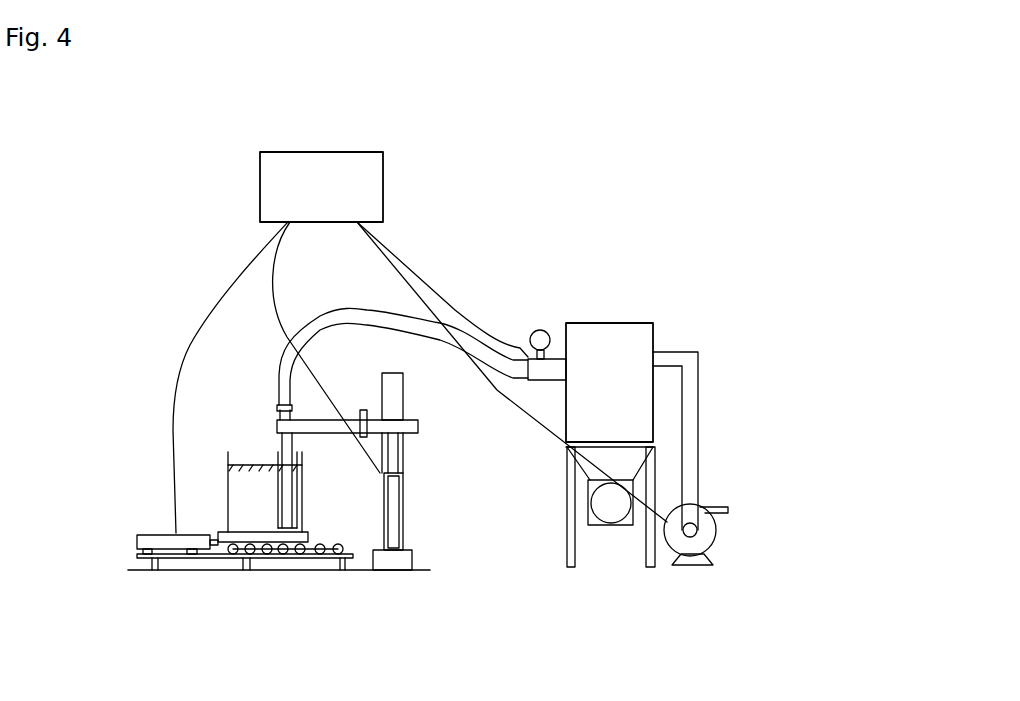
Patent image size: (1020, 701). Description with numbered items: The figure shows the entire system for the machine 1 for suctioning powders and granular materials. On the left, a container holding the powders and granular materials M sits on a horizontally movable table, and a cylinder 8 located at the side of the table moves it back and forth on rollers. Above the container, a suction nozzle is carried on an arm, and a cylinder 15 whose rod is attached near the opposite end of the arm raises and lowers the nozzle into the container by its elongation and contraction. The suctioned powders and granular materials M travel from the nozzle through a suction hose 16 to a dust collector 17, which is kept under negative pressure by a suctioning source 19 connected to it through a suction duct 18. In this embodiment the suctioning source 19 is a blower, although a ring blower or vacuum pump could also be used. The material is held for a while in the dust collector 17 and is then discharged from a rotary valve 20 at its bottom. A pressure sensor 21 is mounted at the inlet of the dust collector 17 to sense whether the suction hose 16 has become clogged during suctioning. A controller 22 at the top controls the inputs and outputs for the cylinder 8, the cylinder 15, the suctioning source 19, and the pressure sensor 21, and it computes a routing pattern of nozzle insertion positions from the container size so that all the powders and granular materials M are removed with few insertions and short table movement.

The machine for suctioning powders and granular materials 1 is at (264, 596).
The cylinder 8 is at (140, 537).
The powders and granular materials M is at (247, 475).
The cylinder 15 is at (393, 532).
The suction hose 16 is at (443, 338).
The dust collector 17 is at (623, 323).
The suction duct 18 is at (698, 428).
The suctioning source 19 is at (712, 508).
The rotary valve 20 is at (588, 510).
The pressure sensor 21 is at (544, 331).
The controller 22 is at (318, 151).